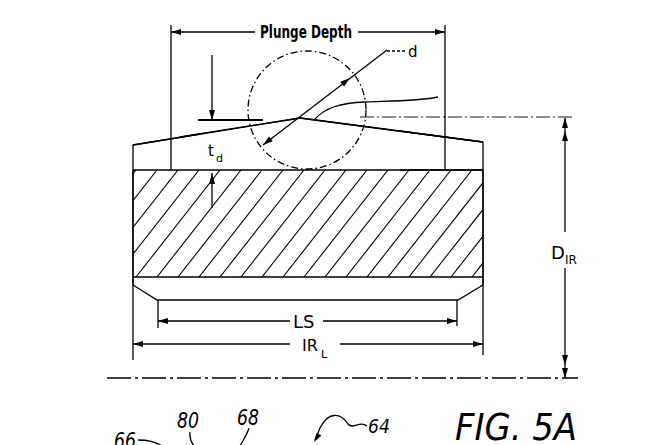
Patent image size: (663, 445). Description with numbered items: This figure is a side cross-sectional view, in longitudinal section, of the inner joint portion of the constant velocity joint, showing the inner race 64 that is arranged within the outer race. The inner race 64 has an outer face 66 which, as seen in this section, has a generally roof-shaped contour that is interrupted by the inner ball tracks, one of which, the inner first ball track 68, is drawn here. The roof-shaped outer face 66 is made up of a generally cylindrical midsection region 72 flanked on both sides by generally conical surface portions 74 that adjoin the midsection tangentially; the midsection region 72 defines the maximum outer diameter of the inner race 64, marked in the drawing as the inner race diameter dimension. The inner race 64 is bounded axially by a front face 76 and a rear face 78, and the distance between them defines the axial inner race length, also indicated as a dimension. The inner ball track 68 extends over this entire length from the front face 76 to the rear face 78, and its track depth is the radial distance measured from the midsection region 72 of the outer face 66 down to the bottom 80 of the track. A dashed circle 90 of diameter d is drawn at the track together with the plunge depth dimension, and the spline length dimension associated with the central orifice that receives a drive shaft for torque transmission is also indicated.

The inner race 64 is at (104, 231).
The outer face 66 is at (153, 142).
The inner first ball track 68 is at (427, 147).
The midsection region 72 is at (438, 97).
The conical surface portions 74 is at (183, 137).
The front face 76 is at (133, 238).
The rear face 78 is at (483, 250).
The bottom of inner ball track 80 is at (467, 171).
The circular plunge profile 90 is at (363, 92).